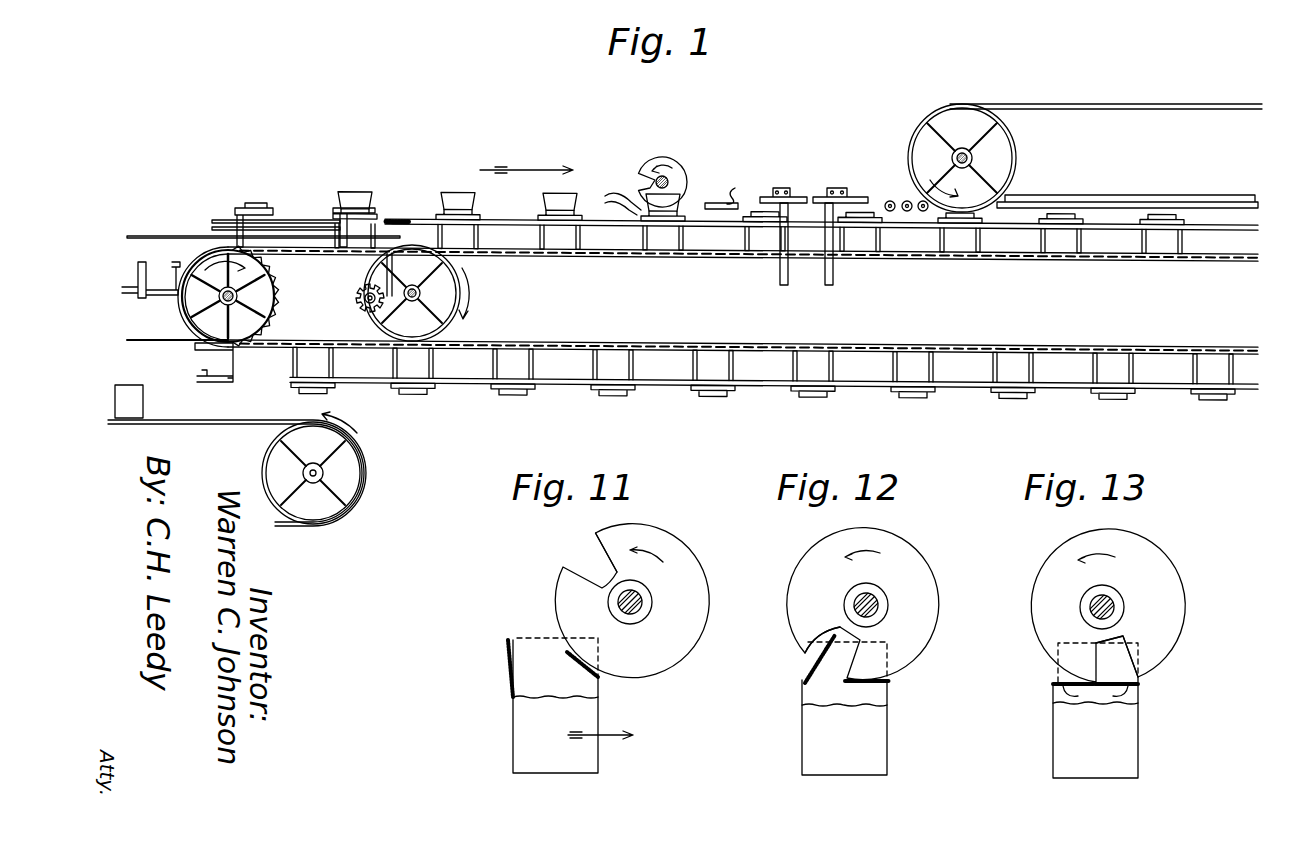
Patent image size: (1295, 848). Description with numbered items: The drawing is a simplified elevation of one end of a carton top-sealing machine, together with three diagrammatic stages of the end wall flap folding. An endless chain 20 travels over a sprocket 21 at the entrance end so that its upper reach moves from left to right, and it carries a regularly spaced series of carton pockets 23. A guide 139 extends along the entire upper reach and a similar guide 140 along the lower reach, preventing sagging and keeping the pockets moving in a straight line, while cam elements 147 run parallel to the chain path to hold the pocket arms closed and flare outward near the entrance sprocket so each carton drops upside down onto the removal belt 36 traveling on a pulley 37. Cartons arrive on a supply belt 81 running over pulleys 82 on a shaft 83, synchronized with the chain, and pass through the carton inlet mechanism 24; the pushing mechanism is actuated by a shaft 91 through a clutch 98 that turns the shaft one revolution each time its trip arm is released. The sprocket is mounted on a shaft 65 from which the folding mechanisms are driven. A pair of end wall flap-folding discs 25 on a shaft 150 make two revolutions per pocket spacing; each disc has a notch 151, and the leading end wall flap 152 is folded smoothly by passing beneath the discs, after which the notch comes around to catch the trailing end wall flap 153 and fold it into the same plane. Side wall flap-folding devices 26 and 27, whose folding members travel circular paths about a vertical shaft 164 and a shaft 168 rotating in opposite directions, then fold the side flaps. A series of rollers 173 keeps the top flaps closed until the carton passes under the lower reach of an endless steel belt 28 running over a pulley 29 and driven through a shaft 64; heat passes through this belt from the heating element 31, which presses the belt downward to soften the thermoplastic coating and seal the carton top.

In FIG. 1, the endless chain 20 is at (622, 255).
In FIG. 1, the sprocket 21 is at (266, 281).
In FIG. 1, the carton pocket 23 is at (264, 191).
In FIG. 1, the carton inlet mechanism 24 is at (341, 183).
In FIG. 1, the end wall flap-folding disc 25 is at (666, 148).
In FIG. 11, the end wall flap-folding disc 25 is at (535, 581).
In FIG. 12, the end wall flap-folding disc 25 is at (863, 604).
In FIG. 13, the end wall flap-folding disc 25 is at (1183, 563).
In FIG. 1, the side wall flap-folding device 26 is at (784, 178).
In FIG. 1, the side wall flap-folding device 27 is at (836, 178).
In FIG. 1, the endless belt 28 is at (1112, 104).
In FIG. 1, the pulley 29 is at (1012, 142).
In FIG. 1, the heating element 31 is at (1122, 196).
In FIG. 1, the belt 36 is at (250, 420).
In FIG. 1, the pulley 37 is at (340, 452).
In FIG. 1, the shaft 64 is at (975, 160).
In FIG. 1, the shaft 65 is at (266, 310).
In FIG. 1, the carton supply belt 81 is at (160, 236).
In FIG. 1, the pulley 82 is at (437, 307).
In FIG. 1, the shaft 83 is at (421, 292).
In FIG. 1, the shaft 91 is at (362, 306).
In FIG. 1, the clutch 98 is at (343, 297).
In FIG. 1, the guide 139 is at (1020, 258).
In FIG. 1, the guide 140 is at (962, 350).
In FIG. 1, the cam element 147 is at (420, 214).
In FIG. 1, the shaft 150 is at (668, 182).
In FIG. 11, the shaft 150 is at (652, 602).
In FIG. 12, the shaft 150 is at (889, 608).
In FIG. 13, the shaft 150 is at (1125, 607).
In FIG. 11, the notch 151 is at (597, 546).
In FIG. 12, the notch 151 is at (838, 628).
In FIG. 13, the notch 151 is at (1122, 657).
In FIG. 11, the leading end wall flap 152 is at (585, 670).
In FIG. 12, the leading end wall flap 152 is at (891, 686).
In FIG. 13, the leading end wall flap 152 is at (1140, 692).
In FIG. 11, the trailing end wall flap 153 is at (508, 650).
In FIG. 12, the trailing end wall flap 153 is at (808, 659).
In FIG. 13, the trailing end wall flap 153 is at (1053, 692).
In FIG. 1, the vertical shaft 164 is at (778, 268).
In FIG. 1, the shaft 168 is at (836, 275).
In FIG. 1, the roller 173 is at (922, 200).